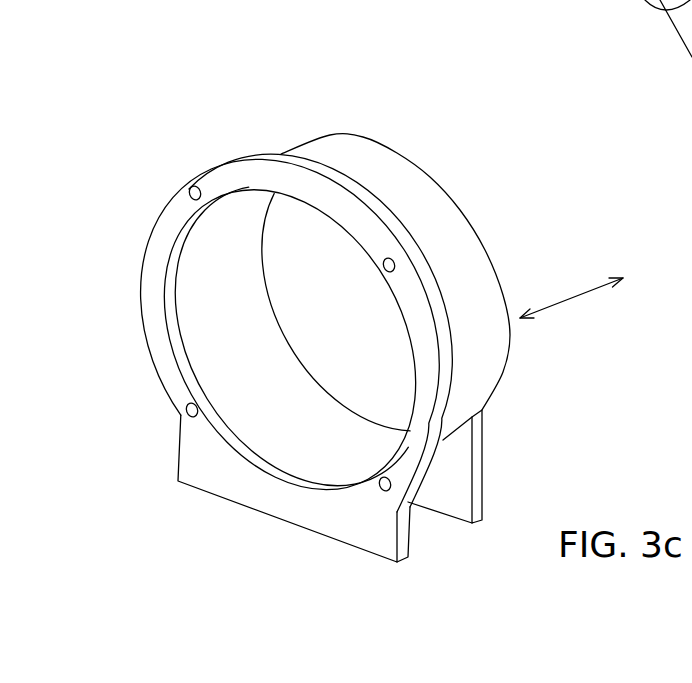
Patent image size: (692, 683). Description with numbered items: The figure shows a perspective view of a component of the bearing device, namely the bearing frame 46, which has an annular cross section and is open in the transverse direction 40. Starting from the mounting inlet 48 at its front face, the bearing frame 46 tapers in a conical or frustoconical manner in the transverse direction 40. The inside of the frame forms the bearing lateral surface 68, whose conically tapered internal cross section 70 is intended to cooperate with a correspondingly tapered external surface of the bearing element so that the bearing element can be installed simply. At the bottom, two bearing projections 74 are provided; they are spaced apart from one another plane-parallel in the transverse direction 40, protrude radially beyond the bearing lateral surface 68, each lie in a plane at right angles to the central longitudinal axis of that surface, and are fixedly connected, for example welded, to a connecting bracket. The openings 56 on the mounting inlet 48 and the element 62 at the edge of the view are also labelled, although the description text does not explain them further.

The transverse direction 40 is at (567, 300).
The bearing frame 46 is at (278, 125).
The mounting inlet 48 is at (257, 460).
The mounting holes 56 is at (187, 193).
The adjacent component 62 is at (653, 3).
The bearing lateral surface 68 is at (292, 430).
The conically tapered internal cross section 70 is at (353, 458).
The bearing projections 74 is at (218, 473).